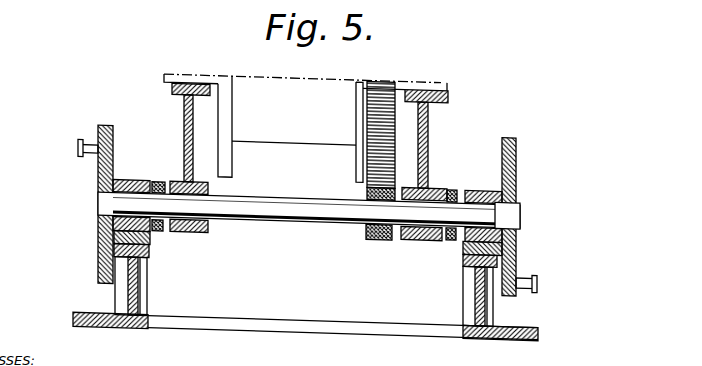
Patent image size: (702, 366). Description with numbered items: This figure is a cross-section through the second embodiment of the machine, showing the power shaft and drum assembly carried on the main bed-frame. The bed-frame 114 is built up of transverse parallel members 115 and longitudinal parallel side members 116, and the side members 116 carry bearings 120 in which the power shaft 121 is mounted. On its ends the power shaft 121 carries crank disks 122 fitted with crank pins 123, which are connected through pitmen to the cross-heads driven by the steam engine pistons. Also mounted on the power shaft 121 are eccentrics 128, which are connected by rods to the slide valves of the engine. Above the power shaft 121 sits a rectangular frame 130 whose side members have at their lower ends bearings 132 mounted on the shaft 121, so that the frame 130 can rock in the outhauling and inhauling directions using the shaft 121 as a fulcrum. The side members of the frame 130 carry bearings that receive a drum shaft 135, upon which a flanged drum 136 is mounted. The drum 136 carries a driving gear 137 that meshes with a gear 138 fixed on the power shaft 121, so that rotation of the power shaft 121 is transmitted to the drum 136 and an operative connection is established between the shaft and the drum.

The bed-frame 114 is at (148, 310).
The transverse parallel members 115 is at (289, 316).
The longitudinal parallel side members 116 is at (128, 289).
The bearings 120 is at (145, 165).
The power shaft 121 is at (314, 218).
The crank disks 122 is at (98, 169).
The crank pins 123 is at (90, 126).
The eccentrics 128 is at (157, 227).
The rectangular frame 130 is at (184, 112).
The bearings 132 is at (210, 227).
The drum shaft 135 is at (447, 76).
The flanged drum 136 is at (309, 123).
The driving gear 137 is at (388, 61).
The gear 138 is at (377, 230).